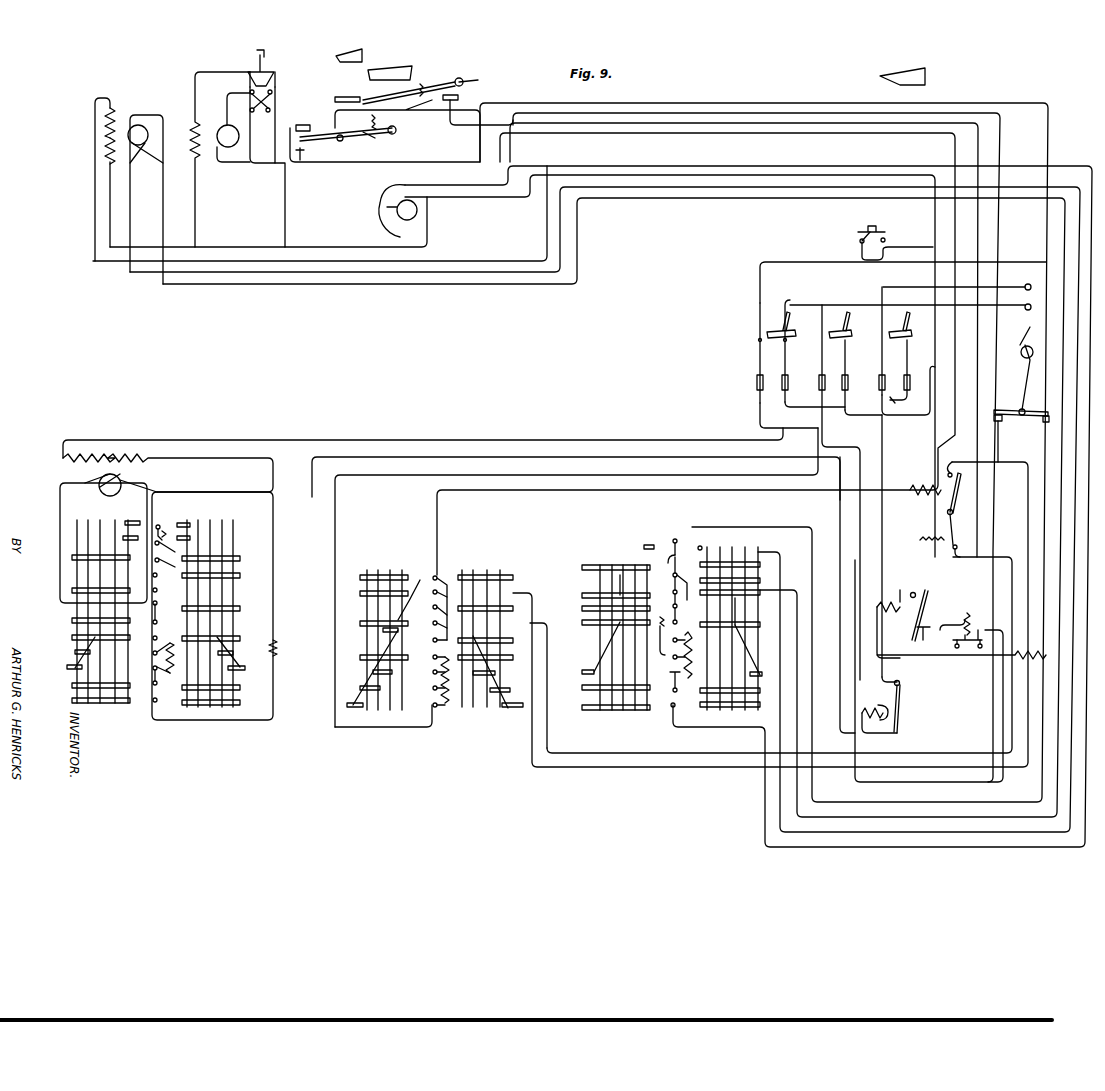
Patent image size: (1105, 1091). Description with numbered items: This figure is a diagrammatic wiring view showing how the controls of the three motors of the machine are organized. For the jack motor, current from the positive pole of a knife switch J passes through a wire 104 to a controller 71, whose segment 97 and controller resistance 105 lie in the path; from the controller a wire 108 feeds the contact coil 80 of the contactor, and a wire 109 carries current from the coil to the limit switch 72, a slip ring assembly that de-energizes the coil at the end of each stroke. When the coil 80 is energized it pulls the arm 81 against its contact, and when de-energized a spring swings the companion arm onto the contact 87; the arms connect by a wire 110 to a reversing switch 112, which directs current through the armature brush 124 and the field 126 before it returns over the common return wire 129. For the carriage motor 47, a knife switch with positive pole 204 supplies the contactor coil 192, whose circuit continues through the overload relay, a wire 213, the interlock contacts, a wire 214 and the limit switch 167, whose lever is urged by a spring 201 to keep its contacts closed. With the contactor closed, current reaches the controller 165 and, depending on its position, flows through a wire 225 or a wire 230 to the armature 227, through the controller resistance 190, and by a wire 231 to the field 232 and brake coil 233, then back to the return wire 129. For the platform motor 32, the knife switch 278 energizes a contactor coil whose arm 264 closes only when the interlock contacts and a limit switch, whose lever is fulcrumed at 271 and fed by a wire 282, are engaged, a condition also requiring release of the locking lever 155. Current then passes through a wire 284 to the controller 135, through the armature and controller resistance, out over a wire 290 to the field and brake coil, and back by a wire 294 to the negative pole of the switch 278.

The carriage motor 47 is at (82, 179).
The electric motor 32 is at (401, 448).
The controller 71 is at (455, 526).
The limit switch 72 is at (378, 210).
The wire 214 is at (752, 103).
The wire 282 is at (831, 113).
The wire 109 is at (942, 120).
The wire 110 is at (770, 124).
The wire 231 is at (92, 223).
The wire 230 is at (160, 233).
The wire 225 is at (128, 285).
The common return wire 129 is at (257, 246).
The field 232 is at (105, 128).
The coil 233 is at (105, 155).
The armature 227 is at (145, 115).
The field 126 is at (192, 120).
The brush 124 is at (234, 132).
The reversing switch 112 is at (277, 68).
The spring 201 is at (385, 131).
The limit switch 167 is at (346, 131).
The fulcrum 271 is at (360, 96).
The knife switch 278 is at (801, 364).
The knife switch J is at (850, 492).
The positive pole 204 is at (891, 343).
The lever 155 is at (1024, 368).
The contact coil 80 is at (920, 484).
The arm 81 is at (962, 493).
The contact 87 is at (944, 562).
The contactor coil 192 is at (879, 601).
The wire 213 is at (967, 662).
The contact arm 264 is at (902, 704).
The controller 135 is at (111, 632).
The wire 290 is at (222, 722).
The segment 97 is at (370, 570).
The controller resistance 105 is at (448, 710).
The wire 108 is at (495, 490).
The controller 165 is at (671, 607).
The controller resistance 190 is at (678, 680).
The wire 104 is at (404, 478).
The wire 284 is at (488, 455).
The wire 294 is at (258, 438).